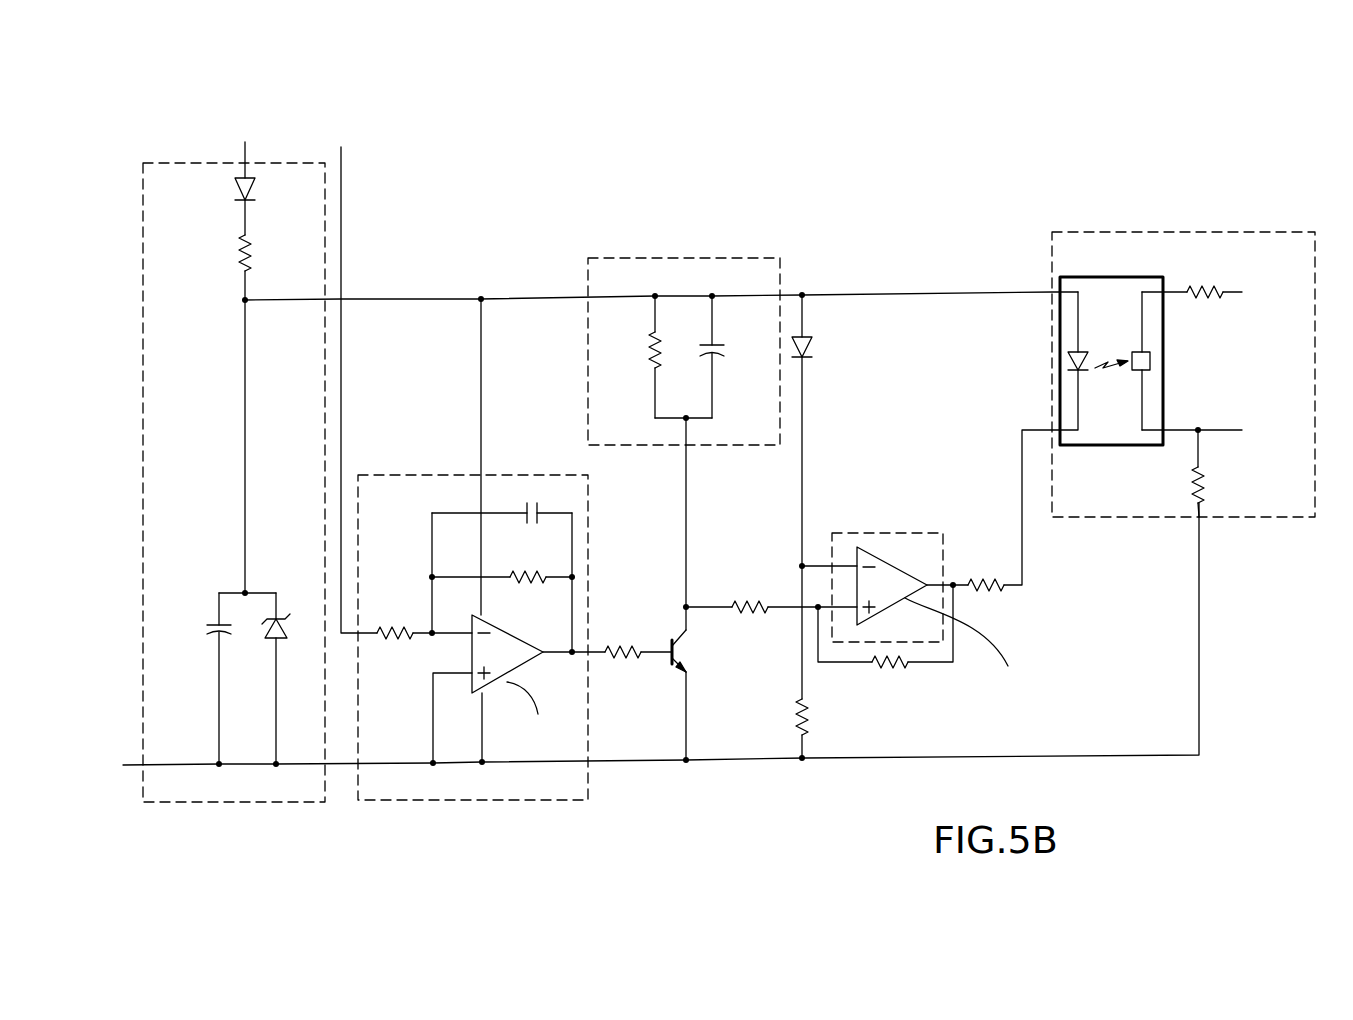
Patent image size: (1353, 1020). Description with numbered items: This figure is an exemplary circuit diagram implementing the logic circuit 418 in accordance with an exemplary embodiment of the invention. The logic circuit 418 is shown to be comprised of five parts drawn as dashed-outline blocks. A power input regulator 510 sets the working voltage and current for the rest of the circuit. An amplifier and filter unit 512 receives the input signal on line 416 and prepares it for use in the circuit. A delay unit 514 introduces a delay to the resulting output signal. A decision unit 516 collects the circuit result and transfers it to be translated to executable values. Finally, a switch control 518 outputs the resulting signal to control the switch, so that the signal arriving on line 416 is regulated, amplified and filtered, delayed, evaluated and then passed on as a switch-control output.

The logic circuit 418 is at (1004, 140).
The line 416 is at (342, 192).
The power input regulator 510 is at (215, 803).
The amplifier and filter unit 512 is at (485, 800).
The delay unit 514 is at (683, 258).
The decision unit 516 is at (885, 533).
The switch control 518 is at (1178, 232).